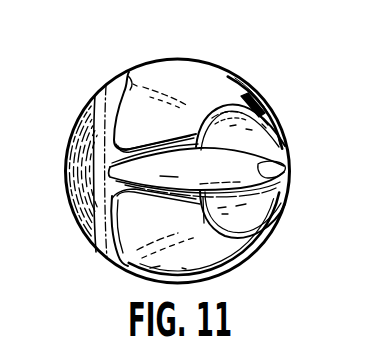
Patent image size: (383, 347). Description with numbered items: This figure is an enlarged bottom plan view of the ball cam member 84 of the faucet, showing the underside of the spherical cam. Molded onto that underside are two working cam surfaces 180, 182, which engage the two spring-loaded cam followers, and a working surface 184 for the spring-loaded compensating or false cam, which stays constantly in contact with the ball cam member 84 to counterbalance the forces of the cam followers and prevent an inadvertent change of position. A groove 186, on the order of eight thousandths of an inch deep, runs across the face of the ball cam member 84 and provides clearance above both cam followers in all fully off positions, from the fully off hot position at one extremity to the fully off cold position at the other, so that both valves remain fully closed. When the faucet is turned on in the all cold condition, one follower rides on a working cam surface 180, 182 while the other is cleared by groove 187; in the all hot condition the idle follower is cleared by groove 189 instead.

The ball cam member 84 is at (300, 124).
The working cam surface 180 is at (147, 235).
The working cam surface 182 is at (151, 104).
The working surface 184 is at (279, 168).
The groove 186 is at (91, 202).
The groove 187 is at (158, 190).
The groove 189 is at (154, 126).